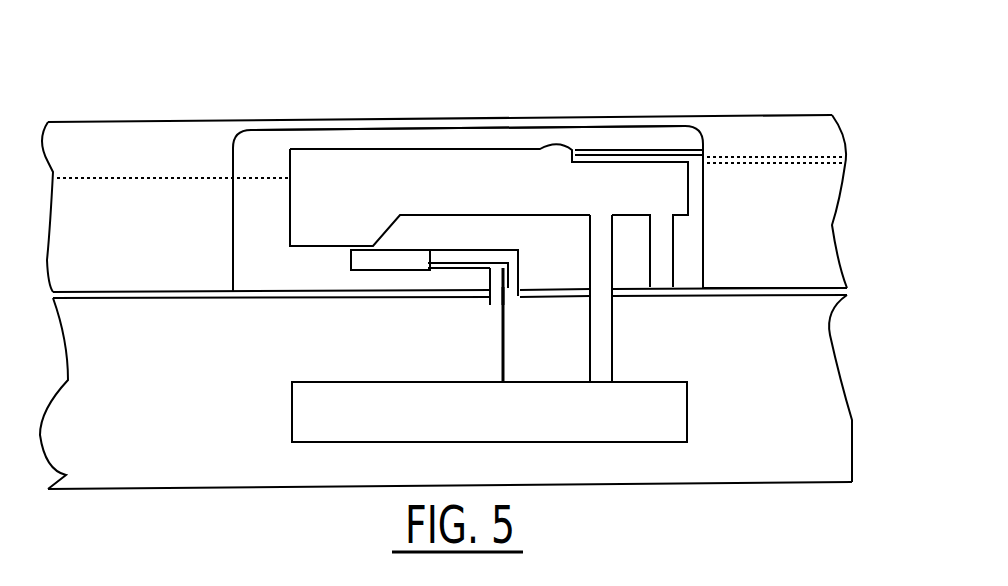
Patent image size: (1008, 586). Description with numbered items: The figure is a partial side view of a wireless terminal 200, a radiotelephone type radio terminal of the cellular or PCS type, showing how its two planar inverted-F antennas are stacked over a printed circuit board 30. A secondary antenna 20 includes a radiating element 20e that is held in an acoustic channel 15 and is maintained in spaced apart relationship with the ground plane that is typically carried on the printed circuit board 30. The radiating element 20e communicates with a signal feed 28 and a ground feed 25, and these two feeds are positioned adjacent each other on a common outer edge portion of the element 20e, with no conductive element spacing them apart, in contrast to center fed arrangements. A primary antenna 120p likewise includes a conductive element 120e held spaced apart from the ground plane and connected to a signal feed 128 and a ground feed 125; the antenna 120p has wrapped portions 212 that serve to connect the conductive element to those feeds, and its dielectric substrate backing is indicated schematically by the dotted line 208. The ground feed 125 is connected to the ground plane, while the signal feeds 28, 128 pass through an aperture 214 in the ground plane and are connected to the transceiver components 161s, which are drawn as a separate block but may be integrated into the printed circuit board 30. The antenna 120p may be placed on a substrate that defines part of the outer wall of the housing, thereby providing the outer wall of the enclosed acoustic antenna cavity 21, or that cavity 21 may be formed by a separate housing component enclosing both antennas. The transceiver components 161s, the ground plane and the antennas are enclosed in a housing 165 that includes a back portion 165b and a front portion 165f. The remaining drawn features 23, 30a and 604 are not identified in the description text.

The wireless terminal 200 is at (457, 58).
The primary antenna 120p is at (448, 157).
The conductive element 120e is at (326, 178).
The acoustic antenna cavity 21 is at (254, 172).
The wrapped portions 212 is at (510, 178).
The back portion 165b is at (708, 115).
The dielectric substrate backing 208 is at (110, 179).
The acoustic channel 15 is at (453, 250).
The secondary antenna 20 is at (454, 259).
The dielectric block 23 is at (393, 249).
The aperture 214 is at (590, 285).
The ground feed 25 is at (515, 272).
The ground feed 125 is at (662, 278).
The printed circuit board 30 is at (803, 285).
The radiating element 20e is at (459, 283).
The via 30a is at (511, 300).
The ground layer 604 is at (207, 302).
The signal feed 28 is at (504, 380).
The signal feed 128 is at (615, 380).
The transceiver components 161s is at (688, 405).
The front portion 165f is at (143, 490).
The housing 165 is at (792, 483).